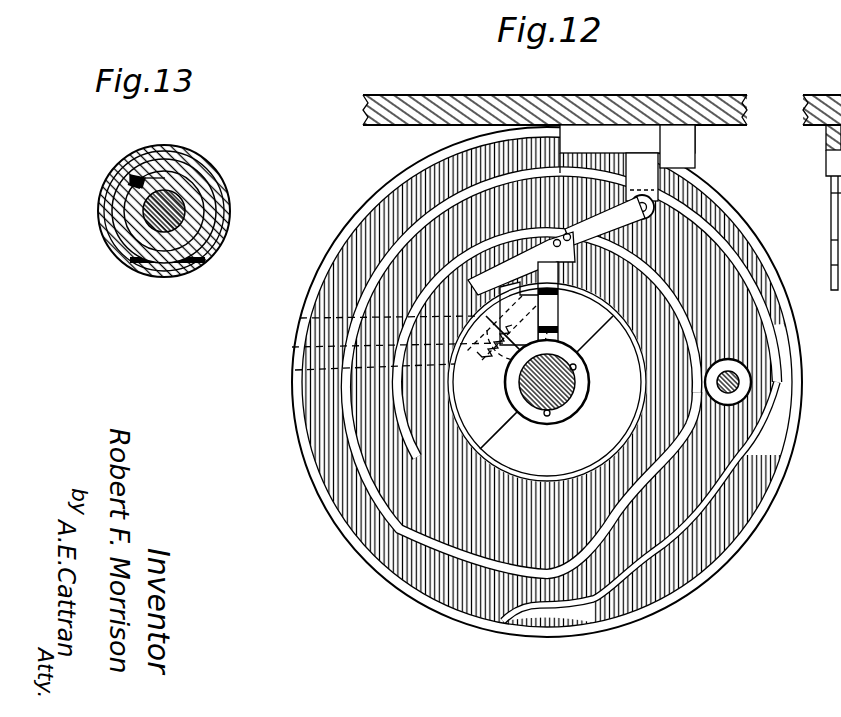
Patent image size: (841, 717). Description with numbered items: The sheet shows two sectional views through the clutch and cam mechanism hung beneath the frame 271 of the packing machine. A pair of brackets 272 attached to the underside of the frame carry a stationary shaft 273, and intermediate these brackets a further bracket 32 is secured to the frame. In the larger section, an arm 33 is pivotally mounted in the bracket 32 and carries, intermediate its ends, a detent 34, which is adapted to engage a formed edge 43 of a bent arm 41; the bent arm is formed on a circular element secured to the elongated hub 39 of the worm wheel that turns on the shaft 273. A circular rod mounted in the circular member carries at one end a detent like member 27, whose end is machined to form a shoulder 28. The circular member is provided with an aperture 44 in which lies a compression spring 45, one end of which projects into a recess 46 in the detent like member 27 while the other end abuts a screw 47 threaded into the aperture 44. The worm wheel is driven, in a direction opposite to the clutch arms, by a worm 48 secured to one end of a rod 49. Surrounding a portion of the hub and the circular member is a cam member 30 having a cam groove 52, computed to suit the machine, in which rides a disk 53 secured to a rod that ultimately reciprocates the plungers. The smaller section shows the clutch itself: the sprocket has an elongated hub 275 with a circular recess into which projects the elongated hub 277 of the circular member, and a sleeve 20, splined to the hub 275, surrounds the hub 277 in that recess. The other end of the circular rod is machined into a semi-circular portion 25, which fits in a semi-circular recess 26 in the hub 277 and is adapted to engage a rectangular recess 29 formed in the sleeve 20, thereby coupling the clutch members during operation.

In FIG. 12, the frame 271 is at (413, 95).
In FIG. 12, the brackets 272 is at (834, 218).
In FIG. 12, the bracket 32 is at (648, 163).
In FIG. 12, the arm 33 is at (618, 200).
In FIG. 12, the detent 34 is at (600, 228).
In FIG. 12, the formed edge 43 is at (533, 263).
In FIG. 12, the shoulder 28 is at (470, 277).
In FIG. 12, the detent like member 27 is at (470, 300).
In FIG. 12, the aperture 44 is at (300, 318).
In FIG. 12, the compression spring 45 is at (292, 347).
In FIG. 12, the screw 47 is at (295, 370).
In FIG. 12, the bent arm 41 is at (560, 292).
In FIG. 12, the recess 46 is at (560, 322).
In FIG. 12, the stationary shaft 273 is at (575, 389).
In FIG. 13, the stationary shaft 273 is at (183, 193).
In FIG. 12, the elongated hub 39 is at (566, 407).
In FIG. 12, the disk 53 is at (752, 381).
In FIG. 12, the cam member 30 is at (700, 582).
In FIG. 12, the cam groove 52 is at (588, 592).
In FIG. 12, the worm 48 is at (833, 281).
In FIG. 12, the rod 49 is at (836, 296).
In FIG. 13, the sleeve 20 is at (122, 243).
In FIG. 13, the elongated hub 275 is at (117, 241).
In FIG. 13, the elongated hub 277 is at (190, 177).
In FIG. 13, the semi-circular recess 26 is at (146, 177).
In FIG. 13, the rectangular recess 29 is at (130, 175).
In FIG. 13, the semi-circular portion 25 is at (128, 186).